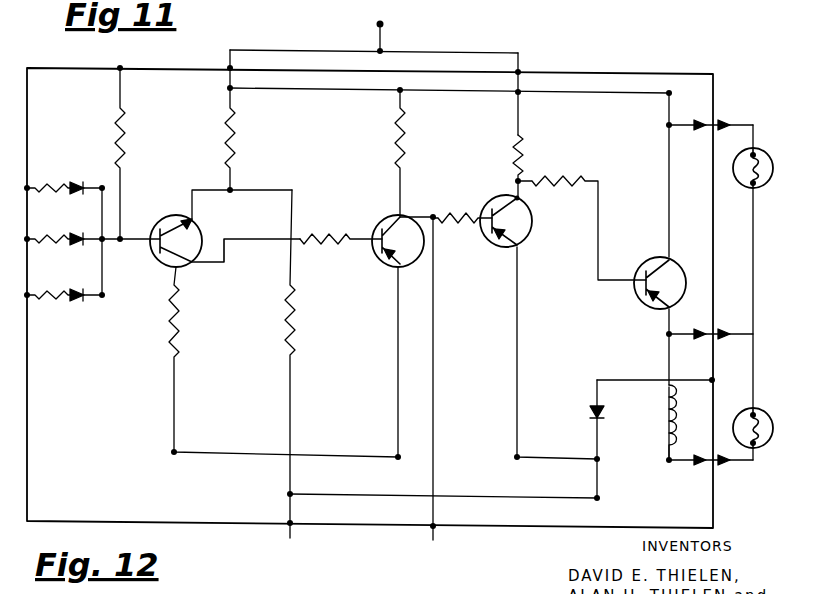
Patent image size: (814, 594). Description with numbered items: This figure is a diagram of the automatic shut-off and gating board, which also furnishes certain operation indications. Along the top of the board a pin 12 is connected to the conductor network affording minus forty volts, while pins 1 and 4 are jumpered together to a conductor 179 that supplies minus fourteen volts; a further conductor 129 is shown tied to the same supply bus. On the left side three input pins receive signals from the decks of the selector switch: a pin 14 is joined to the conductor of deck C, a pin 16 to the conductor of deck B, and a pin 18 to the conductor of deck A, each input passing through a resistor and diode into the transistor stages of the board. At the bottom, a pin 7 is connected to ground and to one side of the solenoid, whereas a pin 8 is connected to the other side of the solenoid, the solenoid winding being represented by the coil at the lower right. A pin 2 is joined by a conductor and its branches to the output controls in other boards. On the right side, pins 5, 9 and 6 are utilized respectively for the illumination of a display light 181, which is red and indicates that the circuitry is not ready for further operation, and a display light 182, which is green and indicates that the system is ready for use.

The pin 1 is at (519, 72).
The pin 2 is at (432, 388).
The pin 4 is at (228, 66).
The pin 5 is at (716, 125).
The pin 6 is at (700, 459).
The pin 7 is at (289, 374).
The pin 8 is at (713, 379).
The pin 9 is at (716, 334).
The pin 12 is at (120, 65).
The pin 14 is at (26, 296).
The pin 16 is at (26, 240).
The pin 18 is at (26, 189).
The conductor 129 is at (388, 14).
The conductor 179 is at (440, 51).
The display light 181 is at (768, 183).
The display light 182 is at (766, 445).